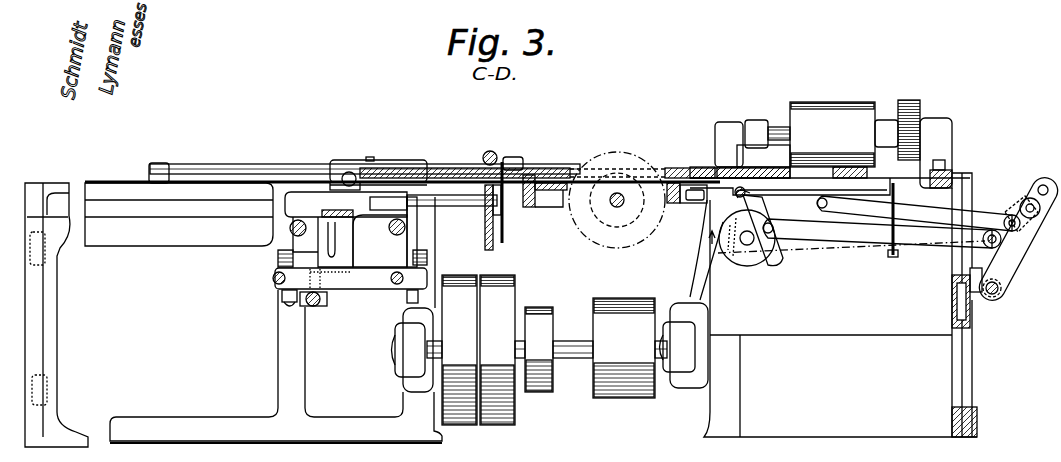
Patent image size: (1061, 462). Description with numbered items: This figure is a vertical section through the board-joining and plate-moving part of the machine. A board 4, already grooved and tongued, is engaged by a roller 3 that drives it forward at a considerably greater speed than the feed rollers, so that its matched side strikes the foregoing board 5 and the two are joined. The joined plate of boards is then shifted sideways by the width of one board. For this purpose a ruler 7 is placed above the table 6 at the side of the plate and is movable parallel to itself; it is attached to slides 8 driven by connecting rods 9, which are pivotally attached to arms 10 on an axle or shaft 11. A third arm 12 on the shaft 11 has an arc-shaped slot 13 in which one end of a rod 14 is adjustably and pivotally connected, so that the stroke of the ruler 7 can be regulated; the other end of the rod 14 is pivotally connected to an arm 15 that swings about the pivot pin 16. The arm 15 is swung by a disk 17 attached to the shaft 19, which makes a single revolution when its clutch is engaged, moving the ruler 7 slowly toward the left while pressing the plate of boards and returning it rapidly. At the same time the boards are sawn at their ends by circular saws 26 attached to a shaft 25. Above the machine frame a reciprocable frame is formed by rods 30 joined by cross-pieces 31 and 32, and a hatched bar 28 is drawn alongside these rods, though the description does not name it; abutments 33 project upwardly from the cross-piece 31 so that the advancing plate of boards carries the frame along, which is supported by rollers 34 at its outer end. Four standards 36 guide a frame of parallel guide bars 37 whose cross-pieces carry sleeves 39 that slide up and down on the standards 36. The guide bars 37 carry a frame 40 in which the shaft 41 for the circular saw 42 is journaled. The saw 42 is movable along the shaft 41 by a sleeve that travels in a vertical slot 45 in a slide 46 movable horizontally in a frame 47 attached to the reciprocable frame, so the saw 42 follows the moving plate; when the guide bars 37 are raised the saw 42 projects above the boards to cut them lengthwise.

The roller 3 is at (821, 134).
The board 4 is at (806, 178).
The foregoing board 5 is at (756, 178).
The table 6 is at (925, 165).
The ruler 7 is at (873, 177).
The slides 8 is at (898, 196).
The connecting rods 9 is at (955, 218).
The arms 10 is at (1017, 255).
The axle or shaft 11 is at (992, 297).
The third arm 12 is at (1027, 192).
The arc-shaped slot 13 is at (1045, 184).
The rod 14 is at (920, 249).
The arm 15 is at (779, 262).
The pivot pin 16 is at (727, 203).
The disk 17 is at (760, 266).
The shaft 19 is at (748, 246).
The shaft 25 is at (623, 205).
The circular saws 26 is at (592, 238).
The bar 28 is at (452, 168).
The rods 30 is at (244, 166).
The cross-piece 31 is at (362, 180).
The cross-piece 32 is at (522, 207).
The abutments 33 is at (350, 172).
The rollers 34 is at (161, 164).
The standards 36 is at (276, 273).
The guide bars 37 is at (272, 252).
The sleeves 39 is at (275, 232).
The frame 40 is at (308, 200).
The shaft 41 is at (452, 218).
The circular saw 42 is at (508, 160).
The vertical slot 45 is at (493, 238).
The slide 46 is at (499, 217).
The frame 47 is at (510, 216).